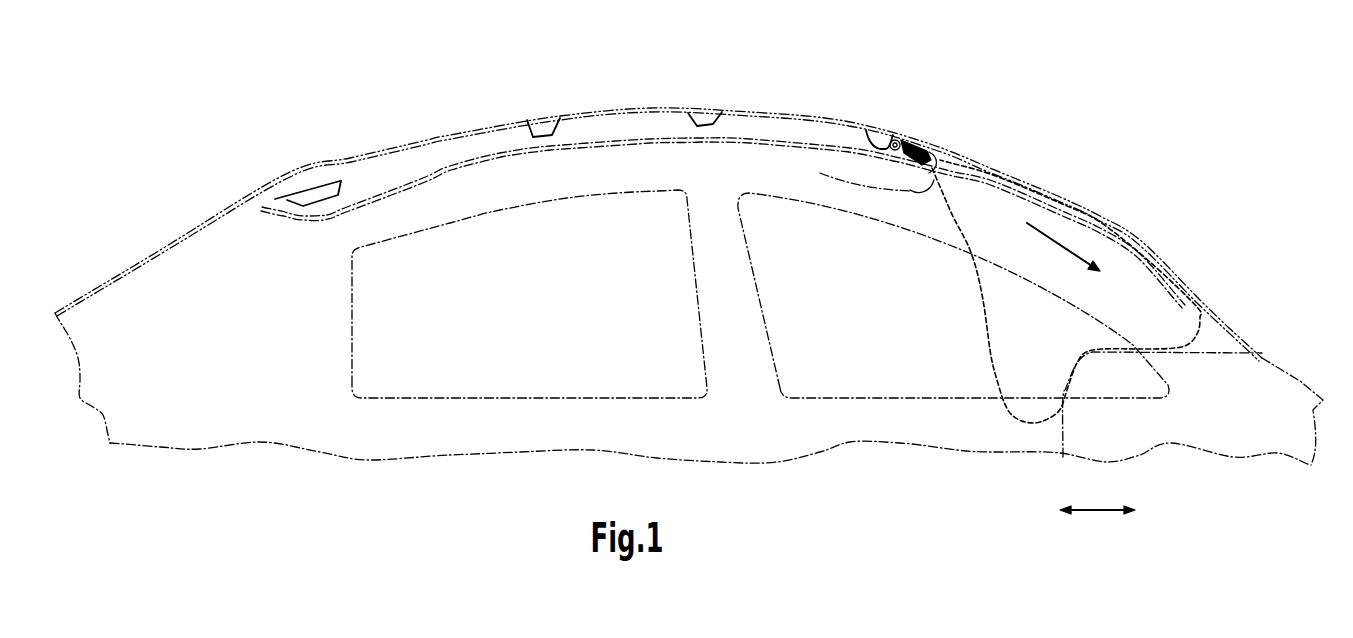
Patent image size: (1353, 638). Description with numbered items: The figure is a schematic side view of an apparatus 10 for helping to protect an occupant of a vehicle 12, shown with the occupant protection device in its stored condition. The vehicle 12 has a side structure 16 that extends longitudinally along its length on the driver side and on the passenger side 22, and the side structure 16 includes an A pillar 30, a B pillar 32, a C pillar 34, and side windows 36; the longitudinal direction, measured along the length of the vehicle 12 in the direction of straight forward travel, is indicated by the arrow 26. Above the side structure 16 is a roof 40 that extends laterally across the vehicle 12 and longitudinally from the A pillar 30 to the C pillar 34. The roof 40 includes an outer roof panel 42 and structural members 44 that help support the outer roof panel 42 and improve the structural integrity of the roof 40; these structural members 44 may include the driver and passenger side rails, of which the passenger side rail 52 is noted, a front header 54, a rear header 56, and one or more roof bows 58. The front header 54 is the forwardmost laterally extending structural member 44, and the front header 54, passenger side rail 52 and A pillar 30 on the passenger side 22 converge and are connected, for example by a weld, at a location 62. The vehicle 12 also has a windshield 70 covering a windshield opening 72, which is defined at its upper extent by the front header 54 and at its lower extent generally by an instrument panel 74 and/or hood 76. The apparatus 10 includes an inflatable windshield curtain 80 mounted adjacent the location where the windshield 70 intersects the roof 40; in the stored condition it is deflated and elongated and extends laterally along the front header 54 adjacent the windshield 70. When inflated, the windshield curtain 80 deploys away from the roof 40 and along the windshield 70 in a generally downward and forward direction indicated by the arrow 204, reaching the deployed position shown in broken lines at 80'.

The apparatus 10 is at (1017, 128).
The vehicle 12 is at (992, 105).
The side structure 16 is at (737, 413).
The passenger side 22 is at (978, 460).
The arrow indicating longitudinal direction 26 is at (1095, 512).
The A pillar 30 is at (1132, 290).
The B pillar 32 is at (723, 298).
The C pillar 34 is at (255, 285).
The side windows 36 is at (580, 373).
The roof 40 is at (480, 128).
The outer roof panel 42 is at (423, 142).
The structural members 44 is at (556, 116).
The passenger side rail 52 is at (783, 133).
The front header 54 is at (860, 127).
The rear header 56 is at (322, 202).
The roof bows 58 is at (703, 112).
The connection location 62 is at (935, 118).
The windshield 70 is at (1105, 230).
The windshield opening 72 is at (1195, 268).
The instrument panel 74 is at (1113, 373).
The hood 76 is at (1302, 393).
The inflatable windshield curtain 80 is at (878, 127).
The deployed position of windshield curtain 80' is at (1046, 291).
The arrow indicating deployment direction 204 is at (1053, 238).